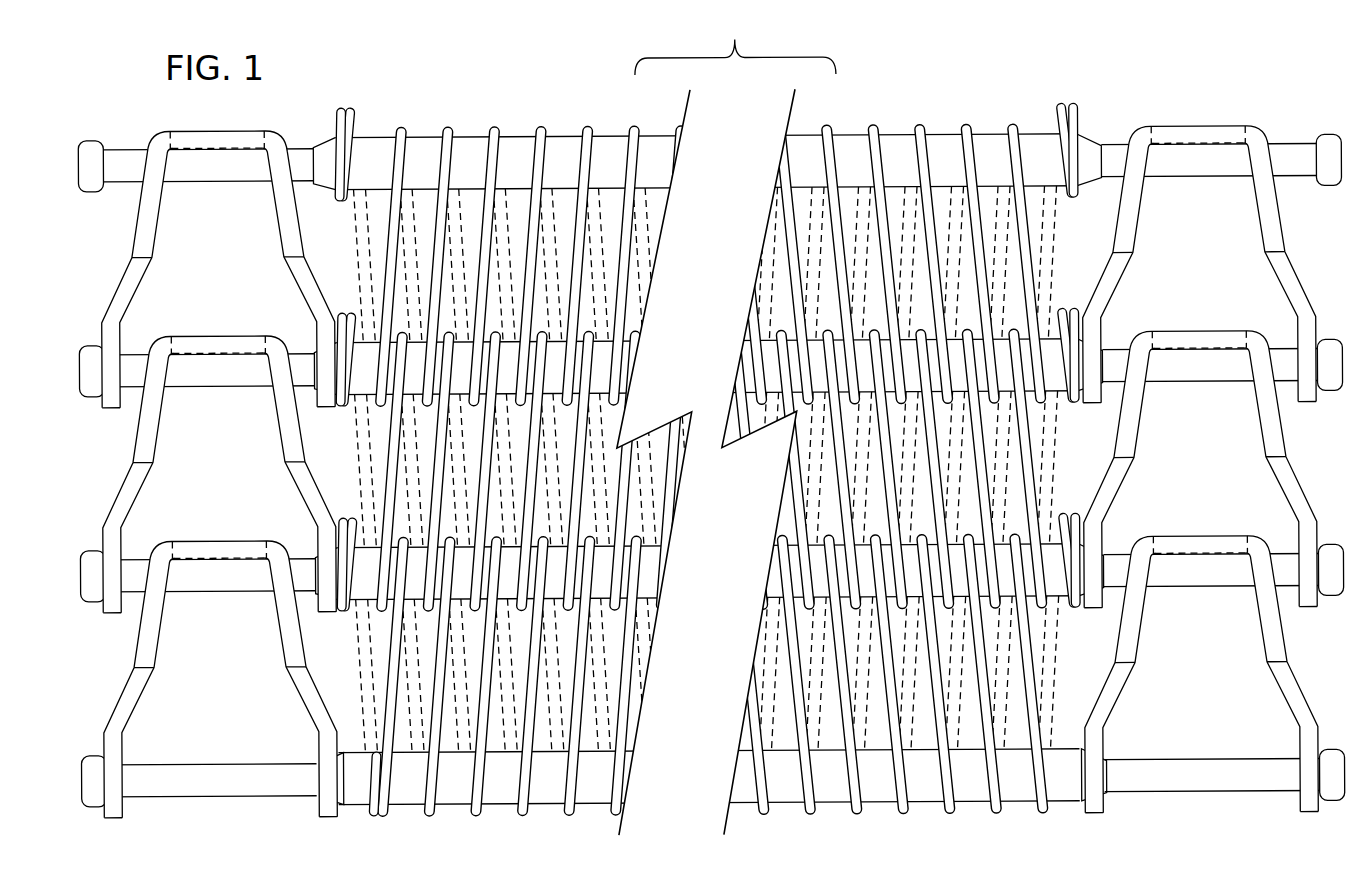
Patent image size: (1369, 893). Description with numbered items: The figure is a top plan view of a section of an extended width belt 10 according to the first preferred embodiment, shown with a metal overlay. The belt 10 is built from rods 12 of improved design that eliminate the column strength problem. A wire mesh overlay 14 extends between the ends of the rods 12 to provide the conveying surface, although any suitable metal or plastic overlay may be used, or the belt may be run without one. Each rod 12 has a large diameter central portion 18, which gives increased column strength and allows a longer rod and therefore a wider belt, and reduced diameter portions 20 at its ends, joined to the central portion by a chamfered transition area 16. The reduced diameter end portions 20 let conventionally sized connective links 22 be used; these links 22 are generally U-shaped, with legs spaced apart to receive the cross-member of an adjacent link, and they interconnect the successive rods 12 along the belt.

The extended width belt 10 is at (711, 449).
The rod 12 is at (737, 464).
The overlay 14 is at (838, 707).
The chamfered transition area 16 is at (1090, 150).
The large diameter central portion 18 is at (853, 146).
The reduced diameter portions 20 is at (1193, 168).
The connective links 22 is at (153, 230).